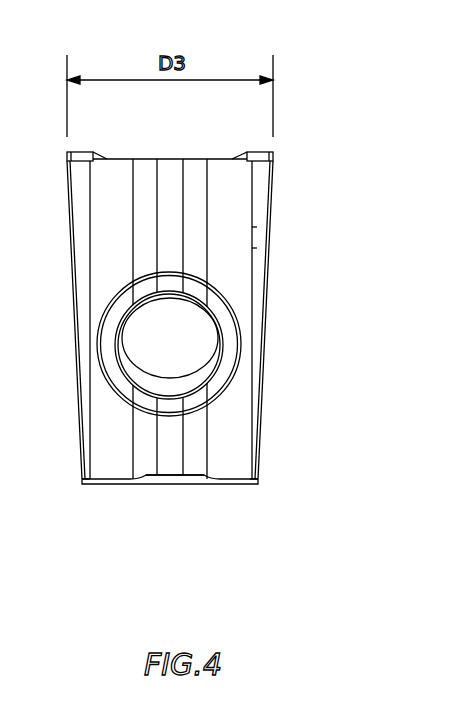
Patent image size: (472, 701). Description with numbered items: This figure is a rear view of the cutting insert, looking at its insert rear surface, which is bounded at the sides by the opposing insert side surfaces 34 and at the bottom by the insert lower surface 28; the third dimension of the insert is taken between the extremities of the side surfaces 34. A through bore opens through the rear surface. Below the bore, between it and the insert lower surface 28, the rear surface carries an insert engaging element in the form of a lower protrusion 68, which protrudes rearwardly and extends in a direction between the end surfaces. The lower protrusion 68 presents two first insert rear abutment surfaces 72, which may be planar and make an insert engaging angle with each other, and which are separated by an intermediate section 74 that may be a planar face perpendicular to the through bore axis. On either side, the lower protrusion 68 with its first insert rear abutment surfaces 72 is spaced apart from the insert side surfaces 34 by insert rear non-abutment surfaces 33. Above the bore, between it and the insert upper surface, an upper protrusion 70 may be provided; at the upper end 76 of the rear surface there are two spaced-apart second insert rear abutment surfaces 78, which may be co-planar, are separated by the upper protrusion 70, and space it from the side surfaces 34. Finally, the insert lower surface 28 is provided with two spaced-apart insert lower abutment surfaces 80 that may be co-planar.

The insert lower surface 28 is at (110, 512).
The insert rear non-abutment surfaces 33 is at (98, 428).
The insert side surfaces 34 is at (270, 288).
The lower protrusion 68 is at (182, 437).
The upper protrusion 70 is at (180, 207).
The first insert rear abutment surfaces 72 is at (147, 458).
The intermediate section 74 is at (173, 457).
The upper end of the insert rear surface 76 is at (262, 175).
The second insert rear abutment surfaces 78 is at (122, 170).
The insert lower abutment surfaces 80 is at (84, 495).